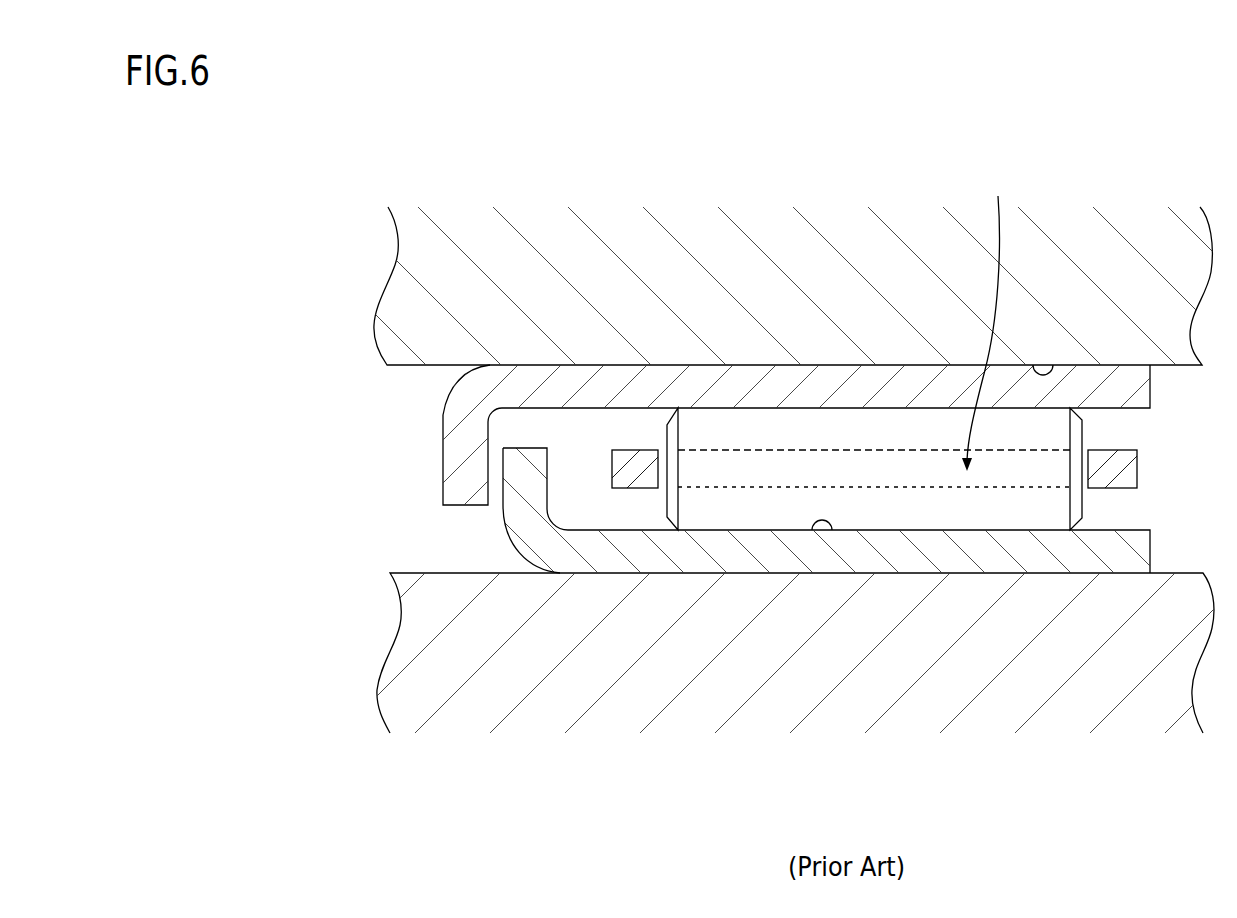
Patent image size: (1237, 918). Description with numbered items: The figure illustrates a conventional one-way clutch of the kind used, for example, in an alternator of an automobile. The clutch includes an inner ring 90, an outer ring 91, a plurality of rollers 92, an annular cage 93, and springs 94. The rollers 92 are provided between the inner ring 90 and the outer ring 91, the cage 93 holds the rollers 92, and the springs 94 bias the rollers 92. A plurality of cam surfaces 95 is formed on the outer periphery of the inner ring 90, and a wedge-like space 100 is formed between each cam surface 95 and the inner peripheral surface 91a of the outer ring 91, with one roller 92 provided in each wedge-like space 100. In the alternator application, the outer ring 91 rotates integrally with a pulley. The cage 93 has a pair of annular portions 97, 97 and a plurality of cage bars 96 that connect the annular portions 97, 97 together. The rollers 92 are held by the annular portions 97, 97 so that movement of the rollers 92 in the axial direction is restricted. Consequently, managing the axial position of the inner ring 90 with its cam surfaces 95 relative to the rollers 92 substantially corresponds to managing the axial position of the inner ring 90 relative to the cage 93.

The inner ring 90 is at (906, 538).
The outer ring 91 is at (812, 397).
The inner peripheral surface 91a is at (1052, 366).
The roller 92 is at (922, 437).
The annular cage 93 is at (1105, 450).
The spring 94 is at (754, 447).
The cam surface 95 is at (815, 528).
The cage bar 96 is at (864, 477).
The annular portion 97 is at (637, 458).
The wedge-like space 100 is at (987, 318).